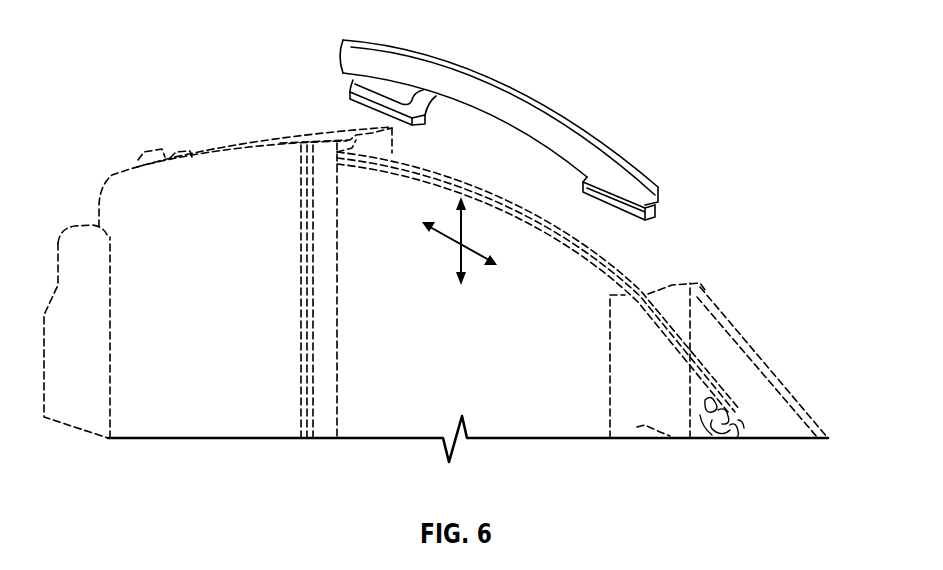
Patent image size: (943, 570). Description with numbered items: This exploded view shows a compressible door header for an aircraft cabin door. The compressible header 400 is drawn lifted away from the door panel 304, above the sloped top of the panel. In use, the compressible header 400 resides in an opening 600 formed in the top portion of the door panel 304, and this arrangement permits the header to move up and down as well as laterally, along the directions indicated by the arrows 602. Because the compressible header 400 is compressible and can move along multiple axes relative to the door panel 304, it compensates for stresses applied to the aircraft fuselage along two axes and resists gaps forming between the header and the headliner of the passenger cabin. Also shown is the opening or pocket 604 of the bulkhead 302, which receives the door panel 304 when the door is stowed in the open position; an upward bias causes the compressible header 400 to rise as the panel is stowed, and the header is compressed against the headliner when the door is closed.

The bulkhead 302 is at (215, 185).
The door panel 304 is at (570, 400).
The compressible header 400 is at (547, 133).
The opening 600 is at (612, 282).
The arrows 602 is at (462, 242).
The opening (or pocket) 604 is at (313, 133).